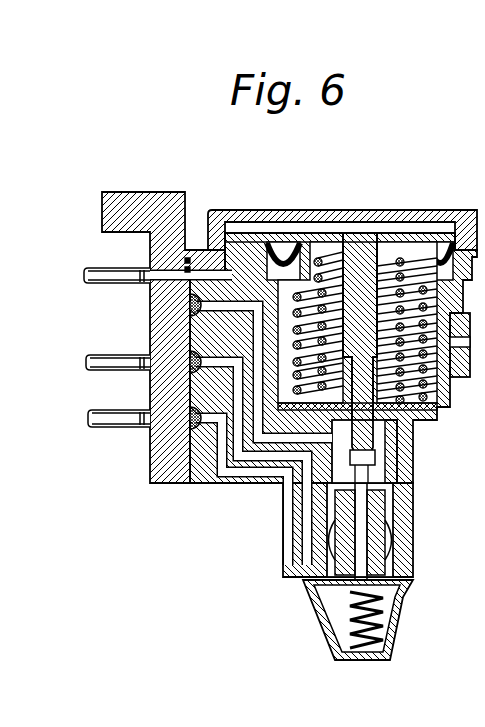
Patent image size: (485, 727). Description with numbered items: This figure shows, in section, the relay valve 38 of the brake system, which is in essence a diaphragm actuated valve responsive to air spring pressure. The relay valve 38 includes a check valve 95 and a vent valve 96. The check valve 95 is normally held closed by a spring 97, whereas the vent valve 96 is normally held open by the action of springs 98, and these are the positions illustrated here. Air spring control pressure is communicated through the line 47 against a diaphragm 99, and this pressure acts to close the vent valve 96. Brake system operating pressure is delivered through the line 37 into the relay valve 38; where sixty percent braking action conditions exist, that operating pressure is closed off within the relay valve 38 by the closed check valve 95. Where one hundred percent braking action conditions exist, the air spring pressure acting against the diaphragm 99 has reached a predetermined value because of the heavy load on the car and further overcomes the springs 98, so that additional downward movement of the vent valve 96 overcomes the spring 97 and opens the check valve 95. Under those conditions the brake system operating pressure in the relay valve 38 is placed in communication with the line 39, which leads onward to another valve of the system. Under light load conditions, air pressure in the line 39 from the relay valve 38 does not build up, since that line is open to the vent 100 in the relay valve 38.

The relay valve 38 is at (378, 188).
The diaphragm 99 is at (416, 236).
The line 47 is at (96, 273).
The vent 100 is at (153, 306).
The line 37 is at (108, 358).
The line 39 is at (110, 430).
The vent valve 96 is at (383, 466).
The check valve 95 is at (393, 588).
The spring 97 is at (380, 622).
The springs 98 is at (410, 367).